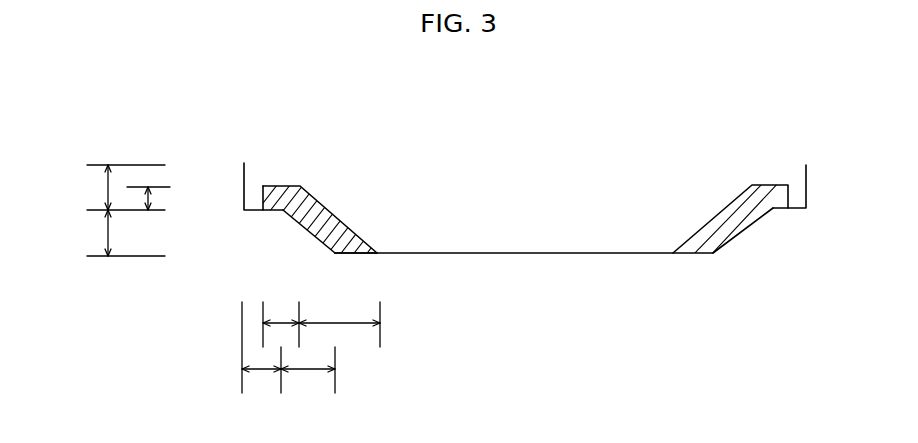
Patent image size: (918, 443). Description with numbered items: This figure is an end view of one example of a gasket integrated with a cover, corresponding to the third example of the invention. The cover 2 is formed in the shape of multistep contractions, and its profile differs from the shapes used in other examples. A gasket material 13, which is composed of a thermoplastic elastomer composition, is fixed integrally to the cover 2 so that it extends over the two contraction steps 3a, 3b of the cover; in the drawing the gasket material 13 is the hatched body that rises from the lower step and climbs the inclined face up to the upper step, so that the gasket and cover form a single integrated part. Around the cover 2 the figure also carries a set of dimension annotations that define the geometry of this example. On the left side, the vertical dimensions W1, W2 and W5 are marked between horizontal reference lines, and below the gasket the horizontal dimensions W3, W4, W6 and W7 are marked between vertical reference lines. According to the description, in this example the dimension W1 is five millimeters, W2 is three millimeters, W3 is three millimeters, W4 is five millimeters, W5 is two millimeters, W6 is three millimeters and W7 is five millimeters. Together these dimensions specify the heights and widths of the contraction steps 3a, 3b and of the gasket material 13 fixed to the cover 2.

The cover 2 is at (522, 252).
The gasket material 13 is at (318, 200).
The contraction step 3a is at (252, 204).
The contraction step 3b is at (370, 242).
The dimension W1 is at (100, 189).
The dimension W2 is at (105, 234).
The dimension W3 is at (263, 373).
The dimension W4 is at (308, 373).
The dimension W5 is at (155, 198).
The dimension W6 is at (283, 321).
The dimension W7 is at (340, 321).